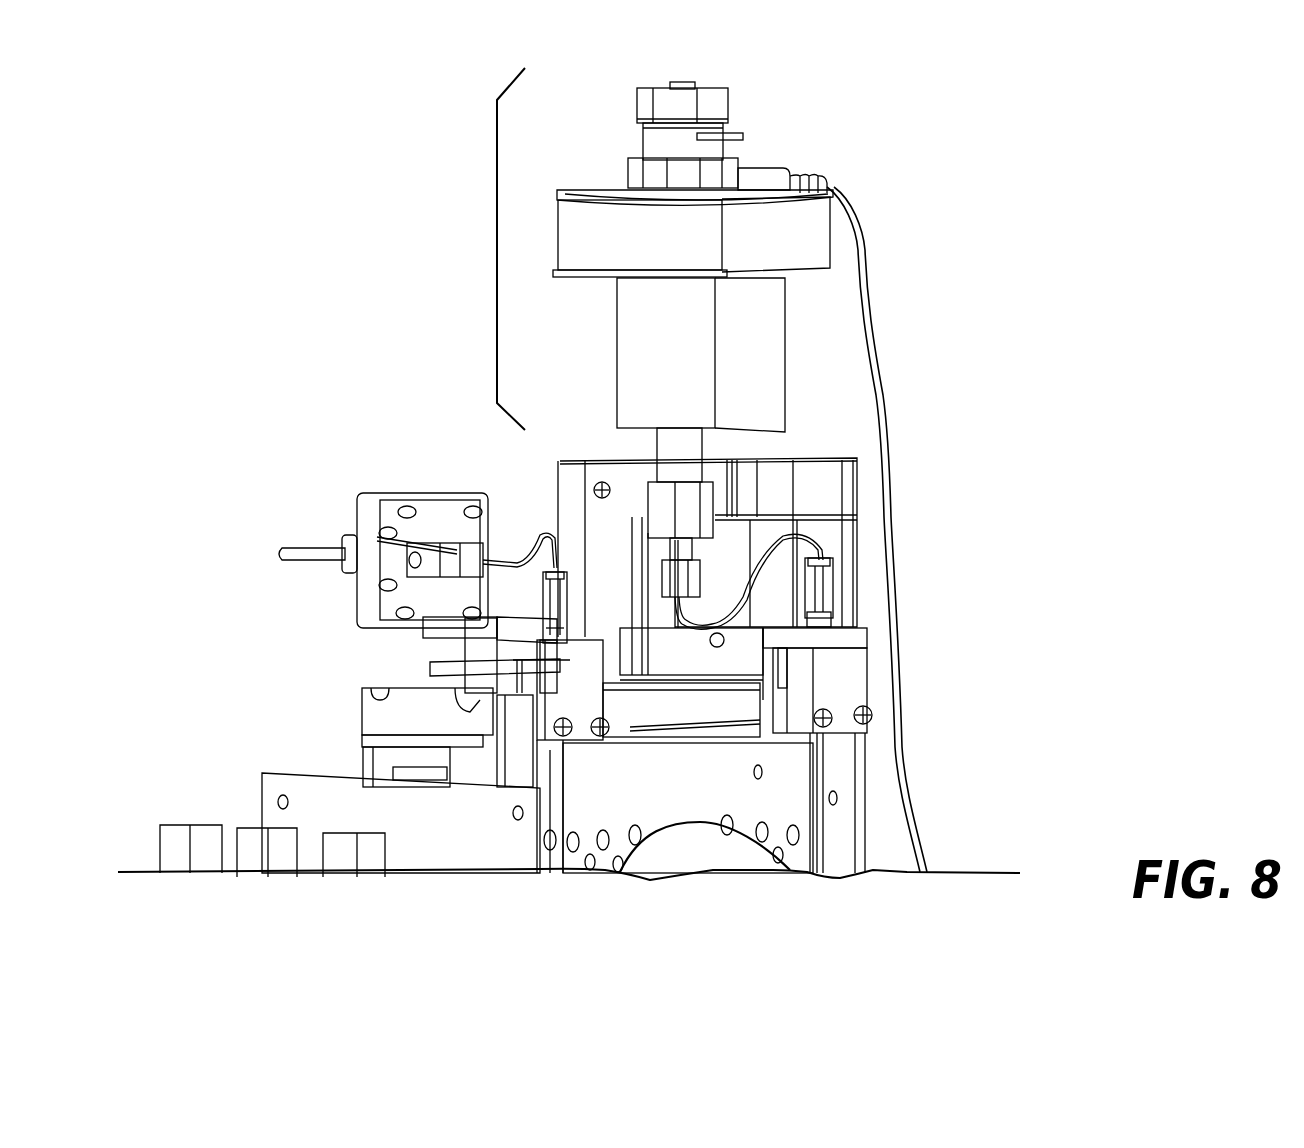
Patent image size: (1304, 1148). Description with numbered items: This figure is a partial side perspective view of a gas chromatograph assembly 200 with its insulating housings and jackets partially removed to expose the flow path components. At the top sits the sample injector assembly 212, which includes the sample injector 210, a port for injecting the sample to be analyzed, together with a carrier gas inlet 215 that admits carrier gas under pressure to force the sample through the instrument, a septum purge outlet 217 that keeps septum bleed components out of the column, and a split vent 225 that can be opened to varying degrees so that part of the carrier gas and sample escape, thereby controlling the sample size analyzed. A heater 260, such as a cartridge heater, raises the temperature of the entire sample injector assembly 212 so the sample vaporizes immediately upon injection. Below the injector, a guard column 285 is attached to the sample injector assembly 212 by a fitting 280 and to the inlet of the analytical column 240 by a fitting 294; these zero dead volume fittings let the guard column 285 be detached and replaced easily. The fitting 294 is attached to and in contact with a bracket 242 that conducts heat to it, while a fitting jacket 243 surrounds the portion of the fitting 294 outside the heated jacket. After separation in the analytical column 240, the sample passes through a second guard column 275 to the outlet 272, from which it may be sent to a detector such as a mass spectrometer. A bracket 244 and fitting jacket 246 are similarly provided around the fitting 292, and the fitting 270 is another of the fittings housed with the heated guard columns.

The gas chromatograph assembly 200 is at (440, 178).
The sample injector 210 is at (637, 90).
The sample injector assembly 212 is at (497, 267).
The carrier gas inlet 215 is at (745, 136).
The septum purge outlet 217 is at (700, 133).
The split vent 225 is at (820, 175).
The analytical column 240 is at (363, 757).
The bracket 242 is at (853, 637).
The fitting jacket 243 is at (850, 675).
The bracket 244 is at (527, 638).
The fitting jacket 246 is at (450, 672).
The heater 260 is at (630, 342).
The fitting 270 is at (422, 542).
The outlet 272 is at (280, 551).
The guard column 275 is at (523, 550).
The fitting 280 is at (692, 573).
The guard column 285 is at (820, 535).
The fitting 292 is at (543, 593).
The fitting 294 is at (833, 590).